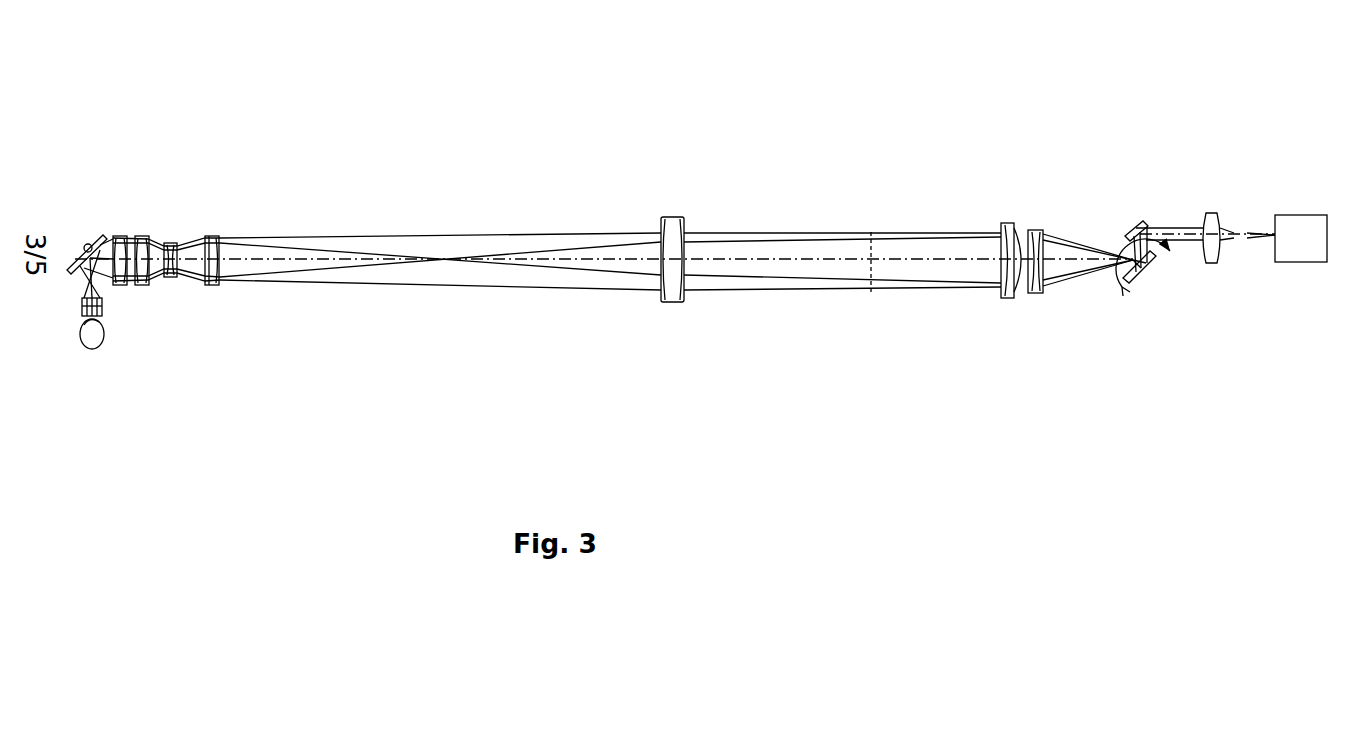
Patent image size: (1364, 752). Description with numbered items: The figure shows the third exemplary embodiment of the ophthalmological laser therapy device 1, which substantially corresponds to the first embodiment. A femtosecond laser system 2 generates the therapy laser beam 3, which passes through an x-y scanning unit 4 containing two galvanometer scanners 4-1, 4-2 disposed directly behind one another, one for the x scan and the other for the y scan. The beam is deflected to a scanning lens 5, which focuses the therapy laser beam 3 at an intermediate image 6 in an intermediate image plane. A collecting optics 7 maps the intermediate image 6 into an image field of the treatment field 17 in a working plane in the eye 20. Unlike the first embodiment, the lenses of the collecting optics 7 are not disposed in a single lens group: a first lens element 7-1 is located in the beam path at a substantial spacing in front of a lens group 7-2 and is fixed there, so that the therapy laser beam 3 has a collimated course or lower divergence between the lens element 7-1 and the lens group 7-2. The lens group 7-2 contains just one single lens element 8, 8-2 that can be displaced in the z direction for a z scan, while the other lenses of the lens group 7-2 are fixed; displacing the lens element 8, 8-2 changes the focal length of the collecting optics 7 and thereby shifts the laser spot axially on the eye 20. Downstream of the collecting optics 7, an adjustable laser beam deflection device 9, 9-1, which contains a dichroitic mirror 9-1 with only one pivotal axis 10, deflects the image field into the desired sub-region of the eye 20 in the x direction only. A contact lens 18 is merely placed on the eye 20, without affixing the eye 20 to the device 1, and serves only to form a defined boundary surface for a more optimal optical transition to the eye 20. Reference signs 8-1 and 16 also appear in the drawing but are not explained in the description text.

The ophthalmological laser therapy device 1 is at (886, 112).
The femtosecond laser system 2 is at (1310, 214).
The laser beam 3 is at (357, 234).
The x-y scanning unit 4 is at (1178, 252).
The galvanometer scanner 4-1 is at (1142, 219).
The galvanometer scanner 4-2 is at (1147, 281).
The scanning lens 5 is at (984, 217).
The intermediate image 6 is at (874, 224).
The collecting optics 7 is at (424, 214).
The first lens element 7-1 is at (674, 215).
The lens group 7-2 is at (115, 223).
The lens element 8 is at (727, 263).
The first lens element 8-1 is at (1202, 205).
The lens element 8-2 is at (171, 280).
The laser beam deflection device 9 is at (108, 192).
The dichroitic mirror 9-1 is at (99, 232).
The pivotal axis 10 is at (84, 244).
The optical axis 16 is at (261, 264).
The treatment field 17 is at (84, 324).
The contact lens 18 is at (105, 308).
The eye 20 is at (98, 362).